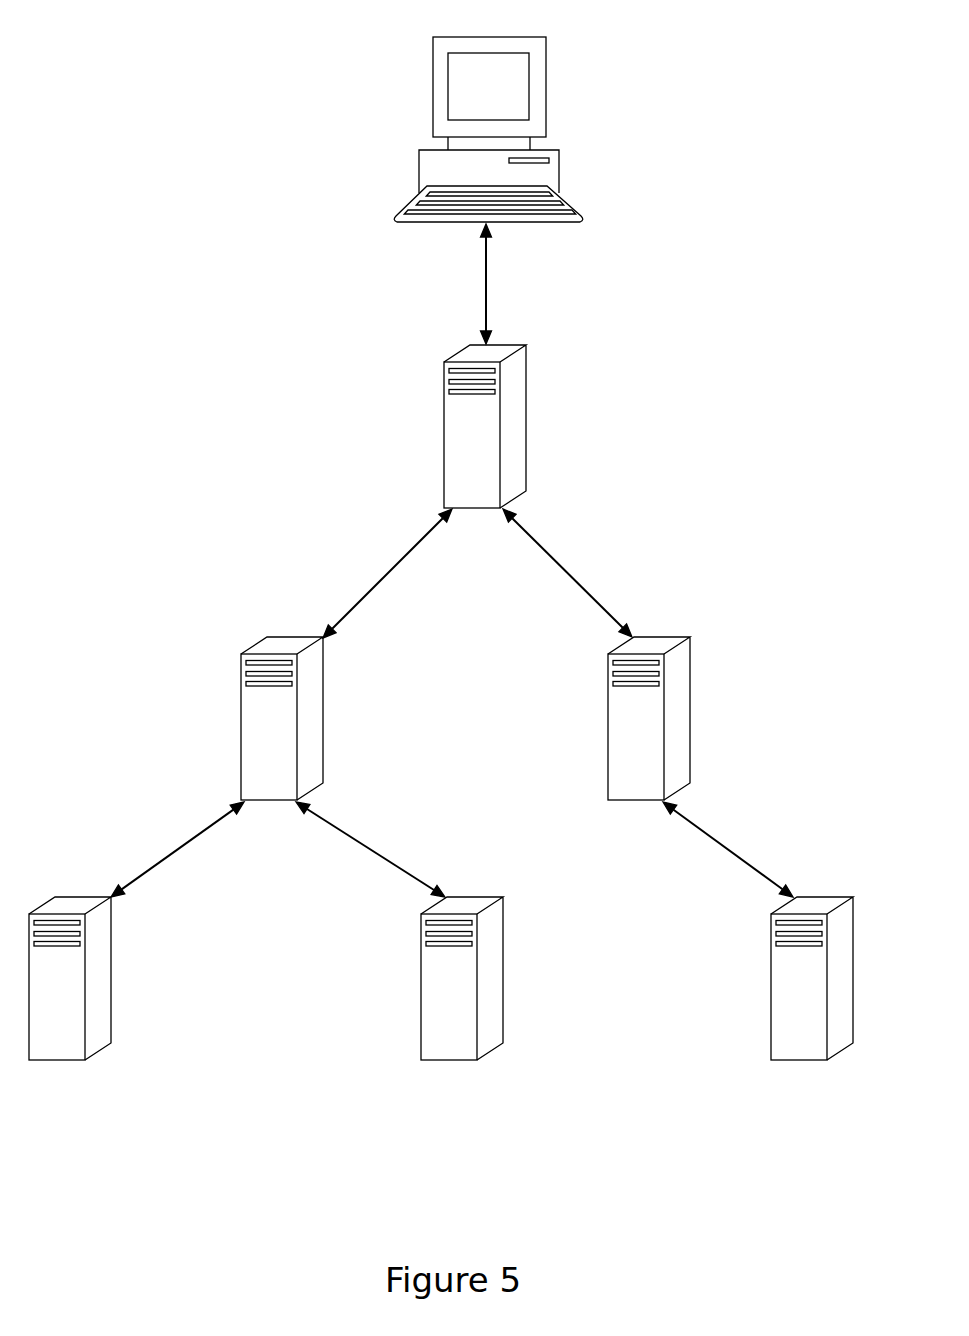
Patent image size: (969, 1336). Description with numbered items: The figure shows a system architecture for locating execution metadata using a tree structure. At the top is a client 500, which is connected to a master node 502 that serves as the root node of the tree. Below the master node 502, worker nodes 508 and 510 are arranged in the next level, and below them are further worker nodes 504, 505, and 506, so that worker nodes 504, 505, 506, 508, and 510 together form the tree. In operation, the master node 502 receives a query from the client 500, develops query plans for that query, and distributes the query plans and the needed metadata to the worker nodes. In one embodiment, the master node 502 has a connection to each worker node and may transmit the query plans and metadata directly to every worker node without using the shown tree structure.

The client 500 is at (473, 95).
The master node 502 is at (458, 445).
The worker node 504 is at (43, 997).
The worker node 505 is at (435, 997).
The worker node 506 is at (785, 997).
The worker node 508 is at (255, 737).
The worker node 510 is at (622, 737).